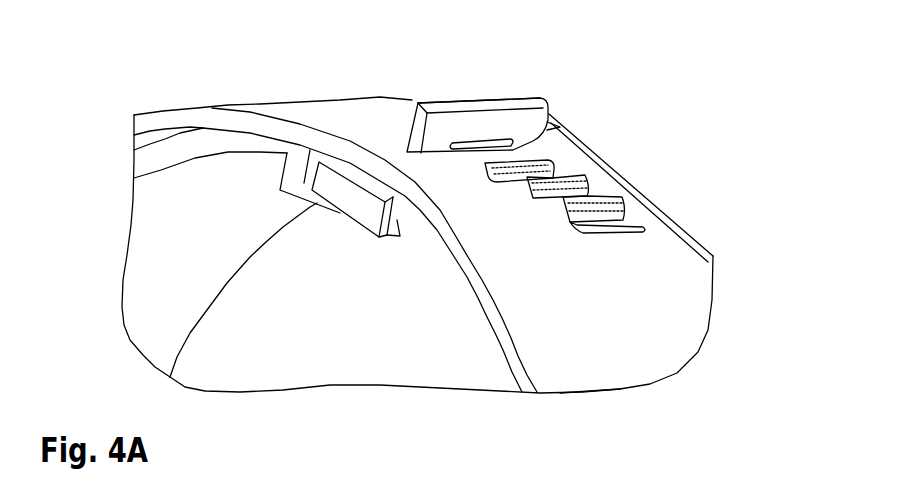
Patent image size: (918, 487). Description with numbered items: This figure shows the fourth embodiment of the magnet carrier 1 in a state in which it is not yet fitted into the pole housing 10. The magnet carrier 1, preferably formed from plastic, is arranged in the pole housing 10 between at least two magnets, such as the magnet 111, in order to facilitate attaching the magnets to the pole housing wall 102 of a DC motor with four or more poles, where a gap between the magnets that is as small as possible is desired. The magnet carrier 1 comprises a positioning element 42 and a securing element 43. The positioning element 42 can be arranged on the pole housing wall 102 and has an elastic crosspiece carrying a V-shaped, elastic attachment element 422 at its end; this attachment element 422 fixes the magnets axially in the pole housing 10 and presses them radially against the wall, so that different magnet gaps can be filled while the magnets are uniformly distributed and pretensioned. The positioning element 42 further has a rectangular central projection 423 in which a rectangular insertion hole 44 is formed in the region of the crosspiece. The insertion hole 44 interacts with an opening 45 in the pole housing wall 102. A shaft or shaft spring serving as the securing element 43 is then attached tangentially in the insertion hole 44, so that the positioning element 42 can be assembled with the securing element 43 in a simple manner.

The magnet carrier 1 is at (182, 81).
The pole housing 10 is at (680, 320).
The magnet 111 is at (148, 162).
The pole housing wall 102 is at (593, 373).
The positioning element 42 is at (335, 182).
The attachment element 422 is at (400, 236).
The central projection 423 is at (463, 102).
The insertion hole 44 is at (488, 138).
The opening 45 is at (527, 140).
The securing element 43 is at (603, 203).